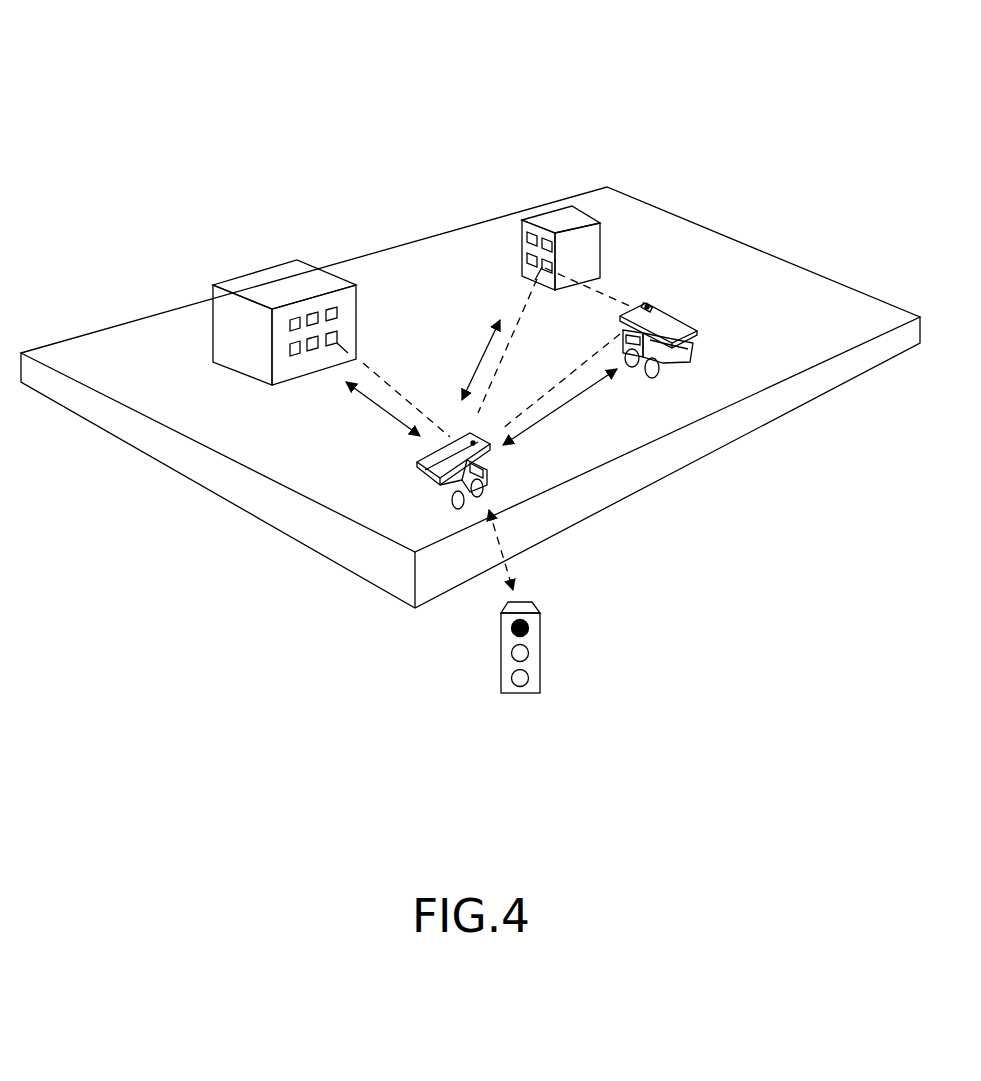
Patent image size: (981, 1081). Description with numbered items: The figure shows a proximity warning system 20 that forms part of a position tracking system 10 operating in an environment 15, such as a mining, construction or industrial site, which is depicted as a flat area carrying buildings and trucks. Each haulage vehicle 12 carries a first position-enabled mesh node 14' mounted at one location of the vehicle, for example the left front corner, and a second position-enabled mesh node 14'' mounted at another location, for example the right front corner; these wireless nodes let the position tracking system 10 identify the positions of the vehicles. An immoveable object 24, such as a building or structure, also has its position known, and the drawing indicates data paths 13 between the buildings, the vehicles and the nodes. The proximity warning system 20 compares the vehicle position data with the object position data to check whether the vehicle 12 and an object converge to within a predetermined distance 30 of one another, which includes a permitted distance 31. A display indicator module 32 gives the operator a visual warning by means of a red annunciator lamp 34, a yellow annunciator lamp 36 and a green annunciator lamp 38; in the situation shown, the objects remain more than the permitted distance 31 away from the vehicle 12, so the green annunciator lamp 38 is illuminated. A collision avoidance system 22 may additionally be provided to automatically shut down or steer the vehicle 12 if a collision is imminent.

The position tracking system 10 is at (214, 172).
The vehicle 12 is at (660, 313).
The data transmission path 13 is at (380, 372).
The first position-enabled mesh node 14' is at (531, 488).
The second position-enabled mesh node 14'' is at (586, 453).
The environment 15 is at (817, 295).
The proximity warning system 20 is at (196, 649).
The collision avoidance system 22 is at (254, 586).
The immoveable object 24 is at (357, 300).
The predetermined distance 30 is at (505, 438).
The permitted distance 31 is at (480, 370).
The display indicator module 32 is at (552, 645).
The red annunciator lamp 34 is at (529, 678).
The yellow annunciator lamp 36 is at (529, 653).
The green annunciator lamp 38 is at (529, 628).